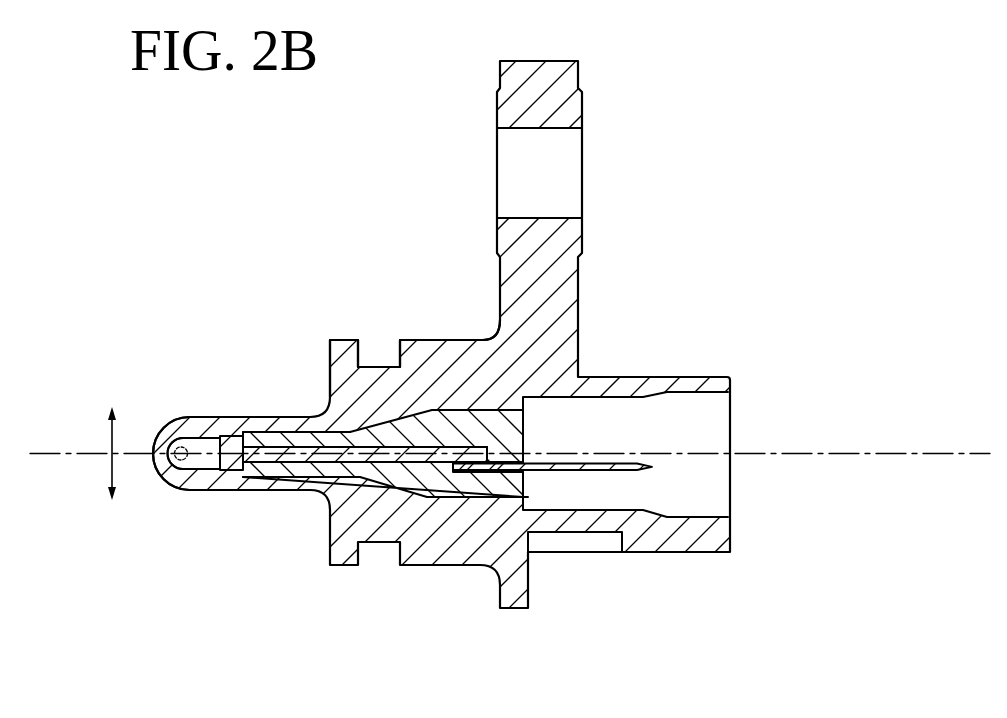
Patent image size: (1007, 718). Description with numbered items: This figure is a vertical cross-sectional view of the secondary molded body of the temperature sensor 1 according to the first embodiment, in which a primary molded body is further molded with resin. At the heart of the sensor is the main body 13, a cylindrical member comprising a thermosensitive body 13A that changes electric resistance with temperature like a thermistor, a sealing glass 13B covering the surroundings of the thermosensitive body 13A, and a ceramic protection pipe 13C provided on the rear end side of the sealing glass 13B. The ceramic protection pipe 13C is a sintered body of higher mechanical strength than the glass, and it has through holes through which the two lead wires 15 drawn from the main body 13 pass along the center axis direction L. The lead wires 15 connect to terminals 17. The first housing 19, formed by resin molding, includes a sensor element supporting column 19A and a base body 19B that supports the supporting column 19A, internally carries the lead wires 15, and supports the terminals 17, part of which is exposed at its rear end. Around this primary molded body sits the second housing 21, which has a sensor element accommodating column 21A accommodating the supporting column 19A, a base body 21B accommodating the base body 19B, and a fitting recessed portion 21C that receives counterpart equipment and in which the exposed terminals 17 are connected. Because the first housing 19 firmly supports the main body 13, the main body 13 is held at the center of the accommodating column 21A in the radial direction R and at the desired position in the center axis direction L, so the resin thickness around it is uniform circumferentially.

The temperature sensor 1 is at (503, 362).
The main body 13 is at (191, 427).
The thermosensitive body 13A is at (173, 487).
The sealing glass 13B is at (207, 470).
The ceramic protection pipe 13C is at (238, 474).
The lead wire 15 is at (434, 466).
The terminal 17 is at (582, 470).
The first housing 19 is at (394, 501).
The sensor element supporting column 19A is at (286, 483).
The base body 19B is at (476, 497).
The second housing 21 is at (348, 330).
The sensor element accommodating column 21A is at (240, 418).
The base body 21B is at (438, 340).
The fitting recessed portion 21C is at (709, 498).
The radial direction R is at (110, 438).
The center axis direction L is at (90, 455).